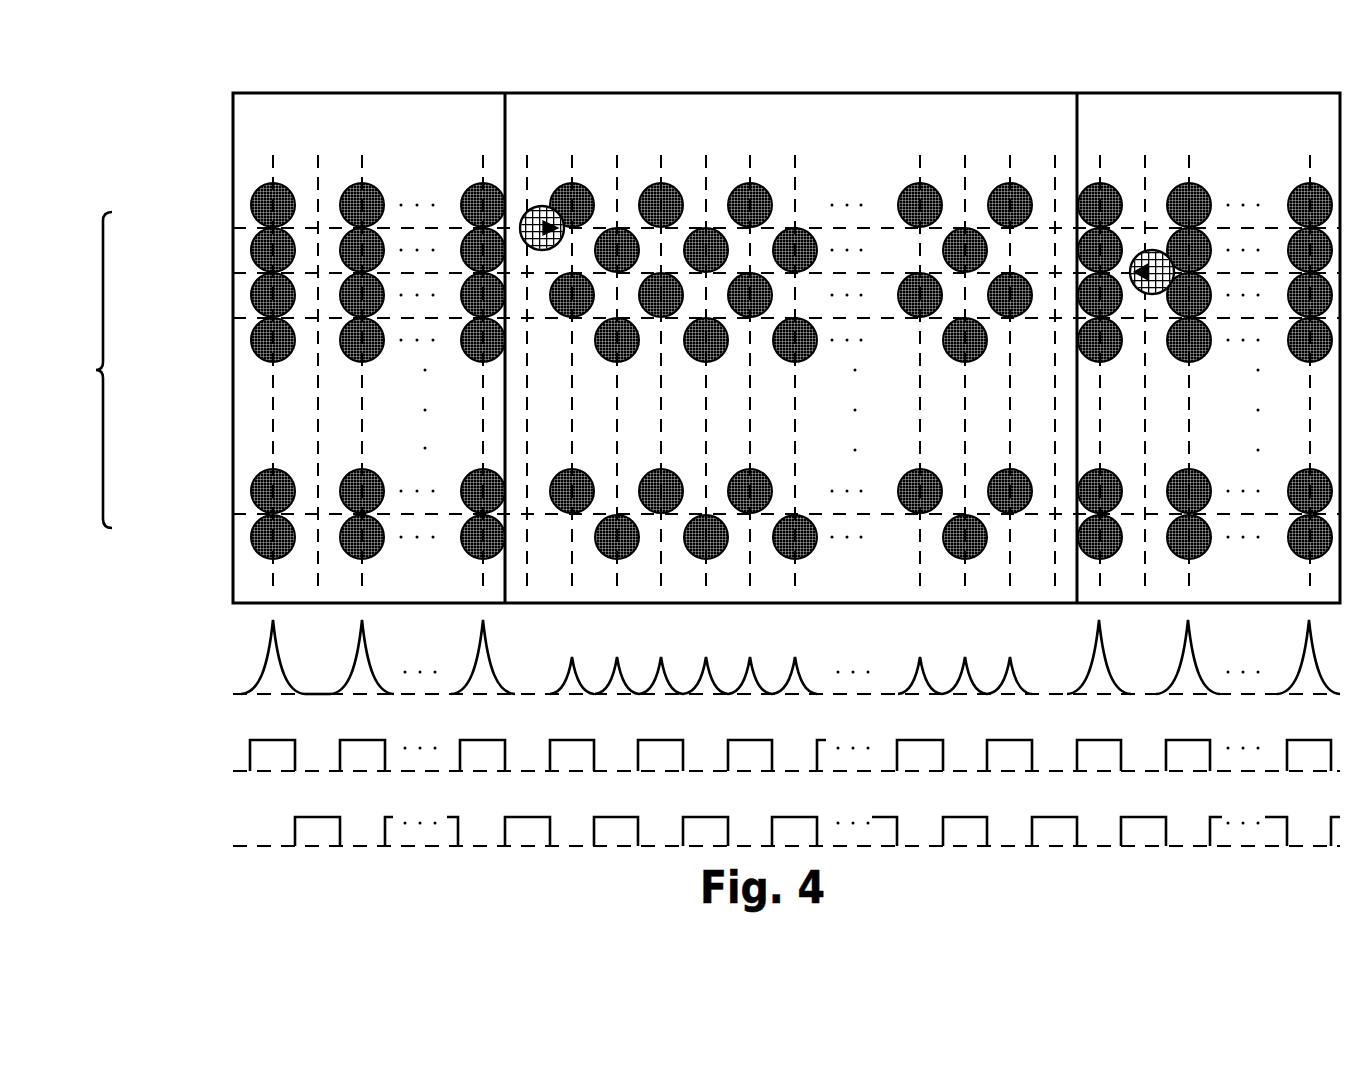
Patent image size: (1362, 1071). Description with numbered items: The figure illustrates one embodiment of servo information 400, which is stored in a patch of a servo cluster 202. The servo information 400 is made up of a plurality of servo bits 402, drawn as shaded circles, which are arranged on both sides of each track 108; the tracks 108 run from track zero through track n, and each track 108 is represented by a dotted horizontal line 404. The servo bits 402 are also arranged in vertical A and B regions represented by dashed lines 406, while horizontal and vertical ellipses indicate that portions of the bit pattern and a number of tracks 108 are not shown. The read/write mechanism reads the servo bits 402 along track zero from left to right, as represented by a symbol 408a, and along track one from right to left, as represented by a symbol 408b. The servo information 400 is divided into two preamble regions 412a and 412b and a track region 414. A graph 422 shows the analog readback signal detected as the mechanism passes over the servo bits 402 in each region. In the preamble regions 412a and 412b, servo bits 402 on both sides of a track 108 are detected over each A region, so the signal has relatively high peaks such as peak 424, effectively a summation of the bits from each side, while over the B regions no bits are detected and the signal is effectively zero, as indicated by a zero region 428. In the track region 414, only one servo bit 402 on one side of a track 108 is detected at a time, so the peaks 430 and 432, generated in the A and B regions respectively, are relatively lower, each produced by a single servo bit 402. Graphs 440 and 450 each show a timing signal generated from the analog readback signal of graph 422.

The servo information 400 is at (190, 112).
The track 108 is at (141, 369).
The servo cluster 202 is at (232, 557).
The servo bits 402 is at (373, 185).
The dotted horizontal line 404 is at (452, 226).
The dashed lines 406 is at (318, 413).
The symbol 408a is at (540, 206).
The symbol 408b is at (1154, 252).
The preamble region 412a is at (378, 327).
The preamble region 412b is at (1205, 317).
The track region 414 is at (798, 325).
The graph 422 is at (423, 697).
The peak 424 is at (278, 621).
The zero region 428 is at (308, 693).
The peak 430 is at (572, 658).
The peak 432 is at (617, 658).
The graph 440 is at (423, 774).
The graph 450 is at (423, 849).